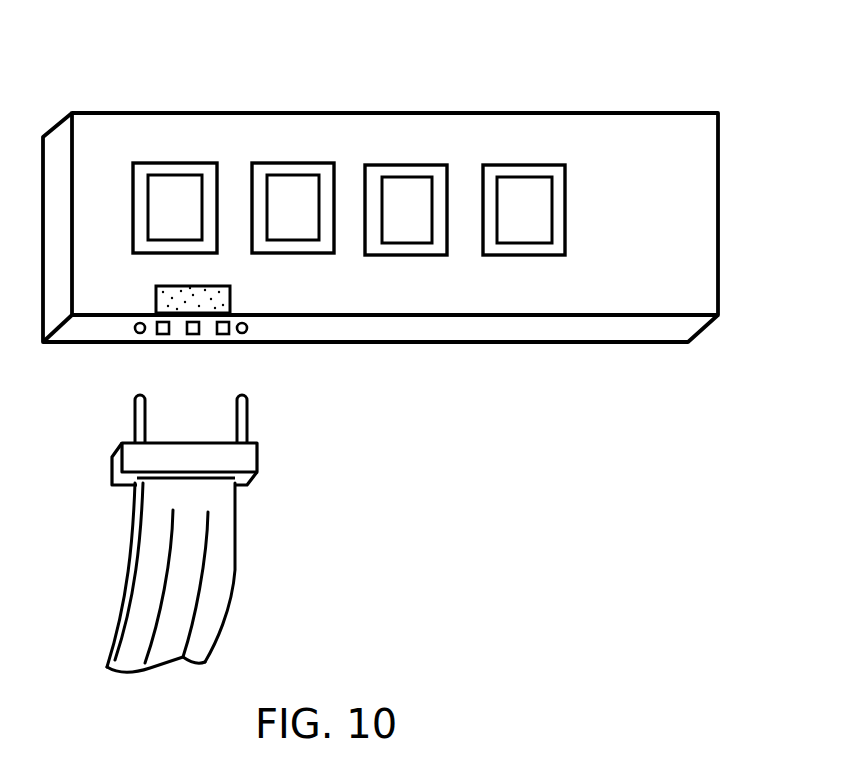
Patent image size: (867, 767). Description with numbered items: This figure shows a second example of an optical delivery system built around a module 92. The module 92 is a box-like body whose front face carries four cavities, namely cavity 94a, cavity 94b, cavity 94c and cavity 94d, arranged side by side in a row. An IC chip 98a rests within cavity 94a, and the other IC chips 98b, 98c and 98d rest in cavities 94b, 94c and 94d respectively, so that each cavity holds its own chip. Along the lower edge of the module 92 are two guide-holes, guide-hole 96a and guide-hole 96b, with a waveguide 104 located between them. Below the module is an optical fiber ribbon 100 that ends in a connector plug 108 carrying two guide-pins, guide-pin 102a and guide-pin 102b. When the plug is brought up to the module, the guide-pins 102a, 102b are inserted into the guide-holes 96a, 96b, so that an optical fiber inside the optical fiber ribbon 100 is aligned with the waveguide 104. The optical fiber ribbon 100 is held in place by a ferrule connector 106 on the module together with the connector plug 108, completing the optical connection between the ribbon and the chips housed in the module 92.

The module 92 is at (705, 113).
The cavity 94a is at (202, 163).
The cavity 94b is at (320, 163).
The cavity 94c is at (430, 165).
The cavity 94d is at (547, 165).
The IC chip 98a is at (195, 228).
The IC chip 98b is at (312, 228).
The IC chip 98c is at (426, 230).
The IC chip 98d is at (544, 230).
The ferrule connector 106 is at (230, 302).
The guide-hole 96a is at (135, 328).
The guide-hole 96b is at (248, 328).
The waveguide 104 is at (193, 334).
The connector plug 108 is at (258, 468).
The guide-pin 102a is at (248, 413).
The guide-pin 102b is at (133, 410).
The optical fiber ribbon 100 is at (208, 568).